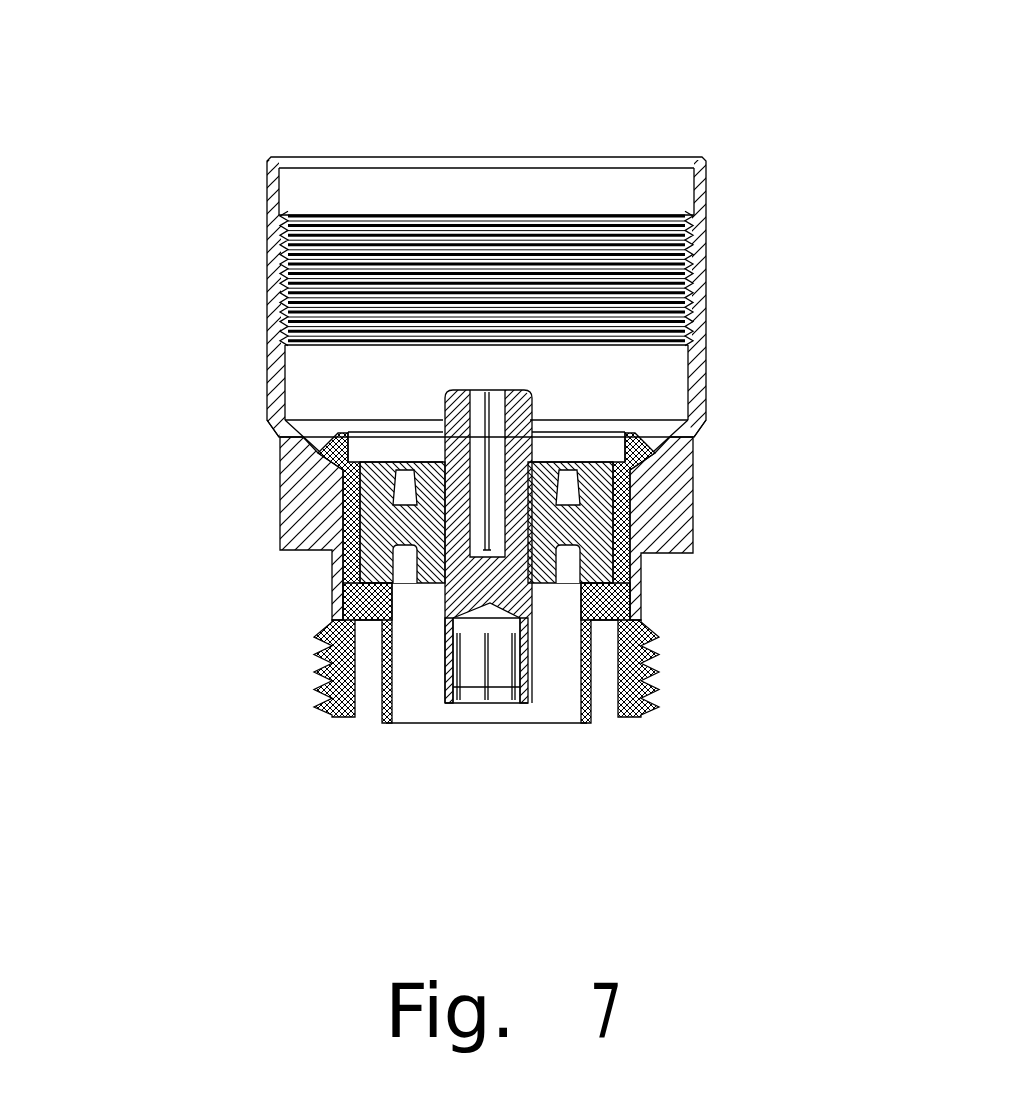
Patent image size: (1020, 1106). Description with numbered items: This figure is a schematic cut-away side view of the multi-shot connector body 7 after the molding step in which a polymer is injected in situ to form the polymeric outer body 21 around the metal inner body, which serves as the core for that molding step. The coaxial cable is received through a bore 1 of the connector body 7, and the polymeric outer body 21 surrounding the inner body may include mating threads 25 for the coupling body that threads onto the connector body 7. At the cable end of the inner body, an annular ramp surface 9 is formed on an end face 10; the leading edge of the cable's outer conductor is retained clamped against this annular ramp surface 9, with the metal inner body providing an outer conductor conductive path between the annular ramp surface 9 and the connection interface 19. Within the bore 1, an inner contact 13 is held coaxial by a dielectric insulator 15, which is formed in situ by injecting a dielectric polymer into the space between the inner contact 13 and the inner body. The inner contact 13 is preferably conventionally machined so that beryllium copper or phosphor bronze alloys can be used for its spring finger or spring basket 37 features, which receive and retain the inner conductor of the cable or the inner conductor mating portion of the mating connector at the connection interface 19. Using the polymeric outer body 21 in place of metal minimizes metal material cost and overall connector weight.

The bore 1 is at (567, 380).
The connector body 7 is at (727, 243).
The annular ramp surface 9 is at (640, 437).
The end face 10 is at (322, 452).
The inner contact 13 is at (500, 673).
The dielectric insulator 15 is at (590, 520).
The connection interface 19 is at (452, 753).
The outer body 21 is at (330, 185).
The mating threads 25 is at (553, 262).
The spring basket 37 is at (482, 413).